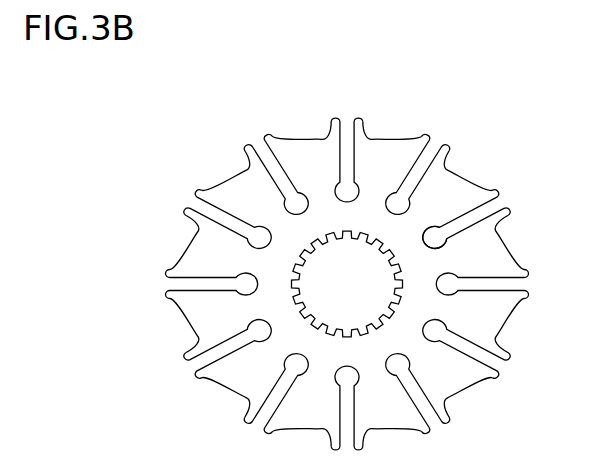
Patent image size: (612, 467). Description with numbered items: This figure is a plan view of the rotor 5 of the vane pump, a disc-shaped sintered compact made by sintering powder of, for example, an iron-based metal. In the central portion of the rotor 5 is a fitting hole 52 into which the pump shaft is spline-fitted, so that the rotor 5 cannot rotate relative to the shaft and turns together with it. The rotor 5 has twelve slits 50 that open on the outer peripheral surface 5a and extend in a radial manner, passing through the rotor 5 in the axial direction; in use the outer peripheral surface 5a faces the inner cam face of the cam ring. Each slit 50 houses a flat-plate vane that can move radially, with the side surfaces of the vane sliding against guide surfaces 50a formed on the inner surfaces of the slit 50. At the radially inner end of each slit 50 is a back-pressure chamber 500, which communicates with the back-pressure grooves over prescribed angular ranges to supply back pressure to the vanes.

The rotor 5 is at (227, 117).
The outer peripheral surface 5a is at (503, 321).
The slit 50 is at (476, 229).
The guide surface 50a is at (443, 236).
The back-pressure chamber 500 is at (438, 233).
The fitting hole 52 is at (358, 296).